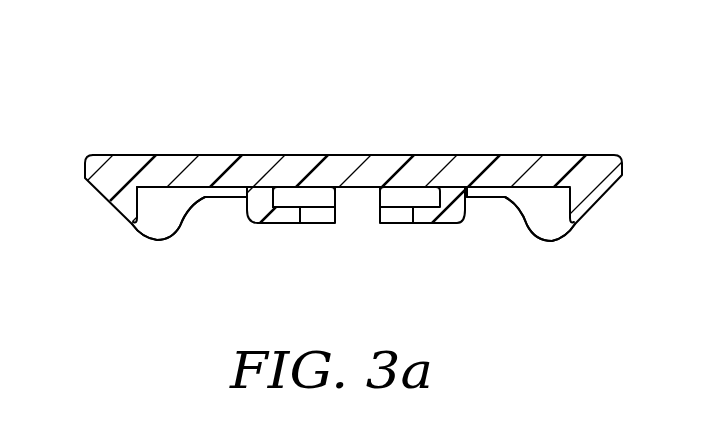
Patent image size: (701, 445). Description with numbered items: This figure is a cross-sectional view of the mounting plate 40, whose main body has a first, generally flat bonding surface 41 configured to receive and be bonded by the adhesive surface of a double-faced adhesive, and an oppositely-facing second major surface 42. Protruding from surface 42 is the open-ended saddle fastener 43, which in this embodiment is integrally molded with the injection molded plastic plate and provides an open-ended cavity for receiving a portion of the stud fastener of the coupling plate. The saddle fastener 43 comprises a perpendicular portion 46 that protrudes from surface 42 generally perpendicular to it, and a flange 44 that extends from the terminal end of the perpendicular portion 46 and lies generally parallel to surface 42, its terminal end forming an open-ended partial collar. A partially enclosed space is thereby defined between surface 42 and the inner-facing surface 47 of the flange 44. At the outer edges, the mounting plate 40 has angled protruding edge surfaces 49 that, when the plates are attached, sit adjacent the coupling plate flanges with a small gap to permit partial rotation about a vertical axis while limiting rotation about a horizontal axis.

The mounting plate 40 is at (155, 92).
The bonding surface 41 is at (485, 155).
The second major surface 42 is at (358, 188).
The saddle fastener 43 is at (257, 223).
The flange 44 is at (292, 223).
The perpendicular portion 46 is at (468, 200).
The inner-facing surface 47 is at (286, 202).
The angled protruding edge surfaces 49 is at (110, 193).